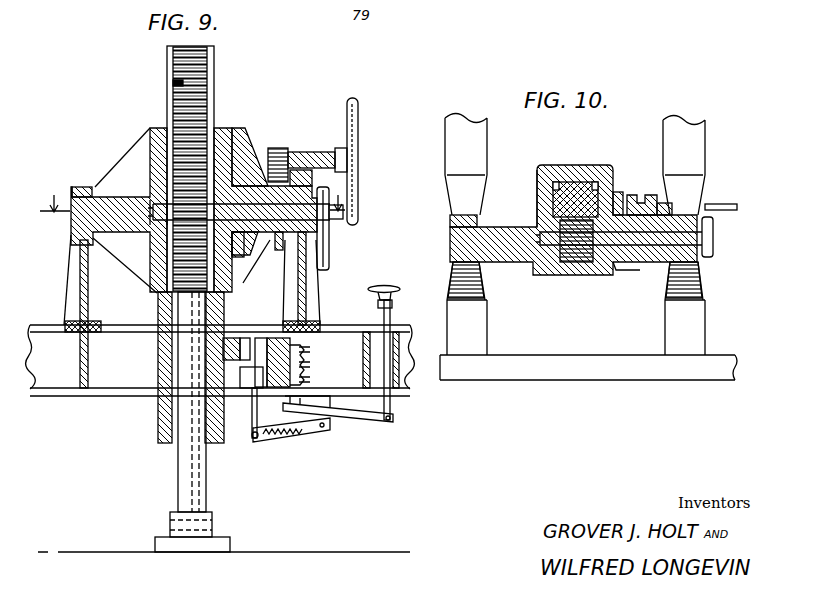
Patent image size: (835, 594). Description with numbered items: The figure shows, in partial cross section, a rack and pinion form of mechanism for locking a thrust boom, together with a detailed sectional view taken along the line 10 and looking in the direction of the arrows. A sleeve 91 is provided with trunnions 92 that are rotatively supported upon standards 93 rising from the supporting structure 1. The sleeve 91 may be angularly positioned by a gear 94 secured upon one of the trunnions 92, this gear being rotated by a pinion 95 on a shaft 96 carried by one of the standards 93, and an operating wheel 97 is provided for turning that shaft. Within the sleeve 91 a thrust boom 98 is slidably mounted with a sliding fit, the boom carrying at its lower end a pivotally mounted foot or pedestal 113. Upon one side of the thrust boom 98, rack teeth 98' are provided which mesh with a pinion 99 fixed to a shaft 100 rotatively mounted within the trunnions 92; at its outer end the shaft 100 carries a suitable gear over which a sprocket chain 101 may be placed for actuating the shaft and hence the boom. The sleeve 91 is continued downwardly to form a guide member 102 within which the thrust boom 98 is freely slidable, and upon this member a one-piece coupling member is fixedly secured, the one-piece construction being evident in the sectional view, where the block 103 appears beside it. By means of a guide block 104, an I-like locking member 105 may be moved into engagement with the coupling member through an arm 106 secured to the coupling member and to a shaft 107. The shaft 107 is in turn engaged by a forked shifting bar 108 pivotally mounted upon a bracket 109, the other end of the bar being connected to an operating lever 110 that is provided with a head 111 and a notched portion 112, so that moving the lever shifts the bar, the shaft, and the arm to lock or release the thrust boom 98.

In FIG. 9, the table bed 1 is at (28, 345).
In FIG. 10, the table bed 1 is at (513, 368).
In FIG. 9, the section line 10 is at (194, 195).
In FIG. 9, the sleeve 91 is at (238, 134).
In FIG. 10, the sleeve 91 is at (537, 192).
In FIG. 9, the trunnions 92 is at (106, 188).
In FIG. 10, the trunnions 92 is at (450, 231).
In FIG. 9, the standards 93 is at (72, 264).
In FIG. 10, the standards 93 is at (452, 278).
In FIG. 9, the gear 94 is at (280, 256).
In FIG. 9, the pinion 95 is at (277, 148).
In FIG. 9, the shaft 96 is at (306, 152).
In FIG. 9, the operating wheel 97 is at (358, 122).
In FIG. 9, the thrust boom 98 is at (192, 279).
In FIG. 10, the thrust boom 98 is at (575, 182).
In FIG. 9, the rack teeth 98' is at (155, 72).
In FIG. 9, the pinion 99 is at (175, 195).
In FIG. 10, the pinion 99 is at (576, 262).
In FIG. 9, the shaft 100 is at (239, 232).
In FIG. 10, the shaft 100 is at (638, 264).
In FIG. 9, the sprocket chain 101 is at (329, 250).
In FIG. 10, the sprocket chain 101 is at (713, 250).
In FIG. 9, the guide member 102 is at (160, 362).
In FIG. 9, the pawl block 103 is at (240, 340).
In FIG. 10, the pawl block 103 is at (619, 192).
In FIG. 9, the guide block 104 is at (310, 356).
In FIG. 10, the guide block 104 is at (666, 186).
In FIG. 9, the I-like locking member 105 is at (246, 392).
In FIG. 10, the I-like locking member 105 is at (645, 192).
In FIG. 9, the arm 106 is at (257, 412).
In FIG. 9, the shaft 107 is at (254, 442).
In FIG. 9, the forked shifting bar 108 is at (292, 438).
In FIG. 10, the forked shifting bar 108 is at (731, 204).
In FIG. 9, the bracket 109 is at (318, 412).
In FIG. 9, the operating lever 110 is at (390, 316).
In FIG. 9, the head 111 is at (388, 287).
In FIG. 9, the notched portion 112 is at (378, 304).
In FIG. 9, the pedestal 113 is at (230, 540).